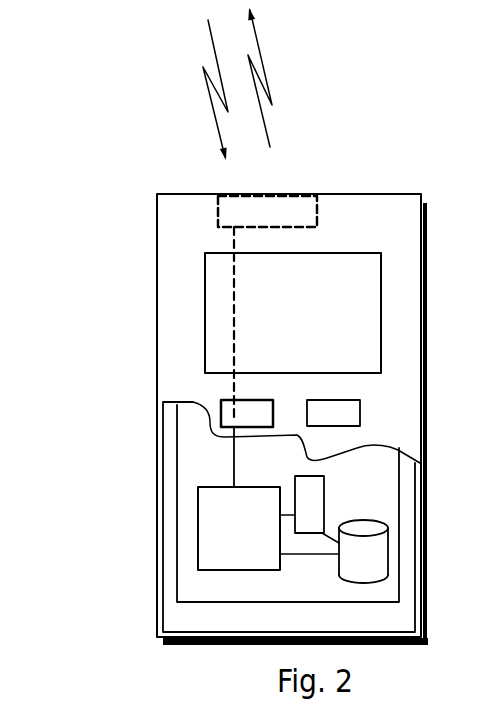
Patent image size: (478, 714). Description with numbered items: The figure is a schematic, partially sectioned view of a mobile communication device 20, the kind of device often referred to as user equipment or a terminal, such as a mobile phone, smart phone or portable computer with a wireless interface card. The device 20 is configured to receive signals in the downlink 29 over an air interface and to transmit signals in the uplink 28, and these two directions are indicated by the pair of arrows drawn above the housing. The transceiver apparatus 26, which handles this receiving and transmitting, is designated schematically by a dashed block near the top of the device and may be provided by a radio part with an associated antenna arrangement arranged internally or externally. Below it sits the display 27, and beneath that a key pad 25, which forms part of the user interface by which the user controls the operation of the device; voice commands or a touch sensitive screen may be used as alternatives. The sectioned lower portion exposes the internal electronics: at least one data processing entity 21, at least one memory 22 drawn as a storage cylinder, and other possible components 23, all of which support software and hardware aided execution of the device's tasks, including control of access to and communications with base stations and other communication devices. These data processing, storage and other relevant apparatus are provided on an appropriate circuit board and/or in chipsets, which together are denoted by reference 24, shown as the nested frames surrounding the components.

The communication device 20 is at (157, 231).
The data processing entity 21 is at (205, 513).
The memory 22 is at (358, 563).
The other possible components 23 is at (310, 490).
The circuit board and/or chipsets 24 is at (197, 587).
The key pad 25 is at (223, 414).
The transceiver apparatus 26 is at (309, 211).
The display 27 is at (215, 300).
The uplink 28 is at (272, 72).
The downlink 29 is at (217, 55).